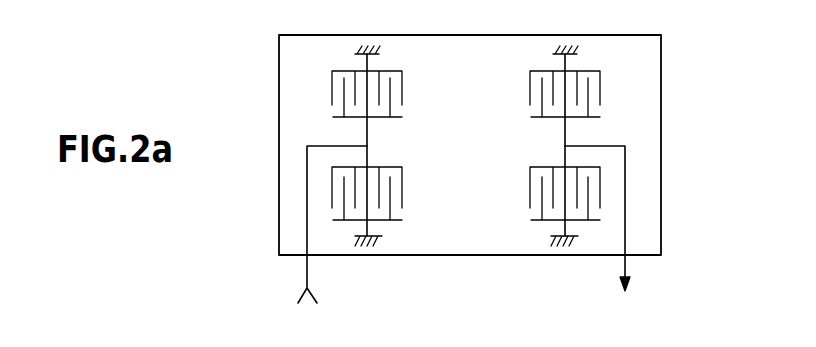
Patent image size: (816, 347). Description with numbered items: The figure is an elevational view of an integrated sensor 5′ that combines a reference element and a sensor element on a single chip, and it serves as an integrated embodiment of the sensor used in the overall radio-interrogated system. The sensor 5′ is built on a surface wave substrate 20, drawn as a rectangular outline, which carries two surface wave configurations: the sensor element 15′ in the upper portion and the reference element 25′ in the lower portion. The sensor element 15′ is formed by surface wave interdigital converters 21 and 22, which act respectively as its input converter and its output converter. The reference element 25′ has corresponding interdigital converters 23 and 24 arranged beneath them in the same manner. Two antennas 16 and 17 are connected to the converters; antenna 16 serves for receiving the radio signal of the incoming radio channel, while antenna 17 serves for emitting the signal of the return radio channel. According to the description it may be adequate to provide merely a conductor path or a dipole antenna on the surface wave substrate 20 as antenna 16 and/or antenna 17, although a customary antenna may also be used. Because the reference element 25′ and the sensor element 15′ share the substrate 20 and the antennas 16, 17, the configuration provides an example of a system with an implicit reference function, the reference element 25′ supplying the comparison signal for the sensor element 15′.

The sensor 5′ is at (668, 183).
The sensor element 15′ is at (466, 55).
The antenna 16 is at (307, 280).
The antenna 17 is at (625, 263).
The surface wave substrate 20 is at (653, 89).
The surface wave interdigital converter 21 is at (402, 85).
The surface wave interdigital converter 22 is at (530, 80).
The interdigital converter 23 is at (403, 190).
The interdigital converter 24 is at (530, 190).
The reference element 25′ is at (468, 238).